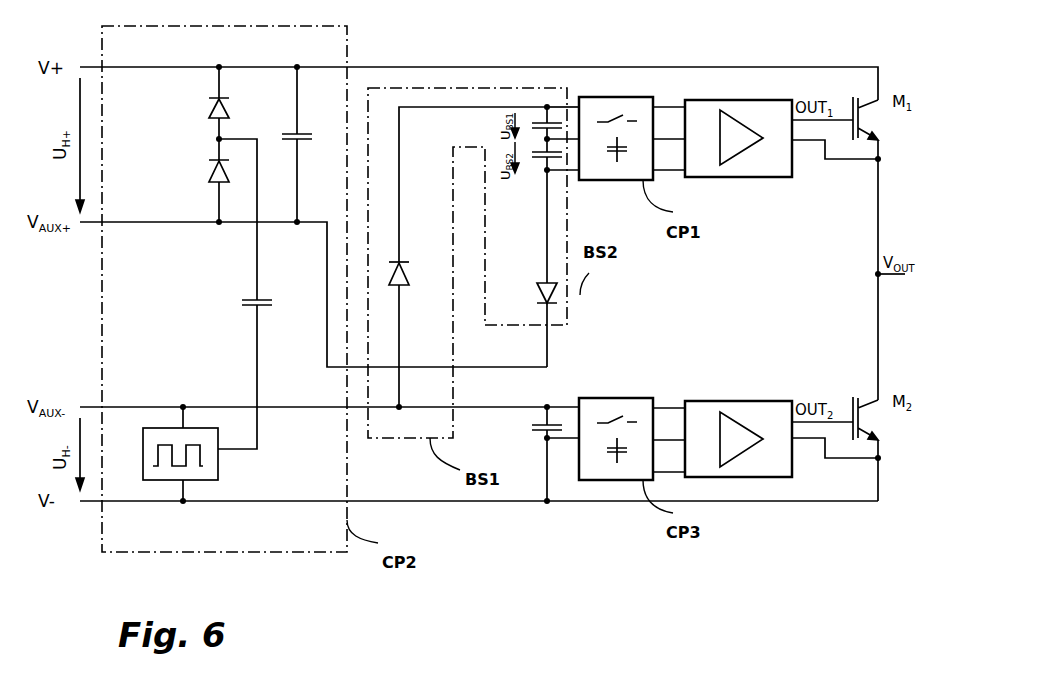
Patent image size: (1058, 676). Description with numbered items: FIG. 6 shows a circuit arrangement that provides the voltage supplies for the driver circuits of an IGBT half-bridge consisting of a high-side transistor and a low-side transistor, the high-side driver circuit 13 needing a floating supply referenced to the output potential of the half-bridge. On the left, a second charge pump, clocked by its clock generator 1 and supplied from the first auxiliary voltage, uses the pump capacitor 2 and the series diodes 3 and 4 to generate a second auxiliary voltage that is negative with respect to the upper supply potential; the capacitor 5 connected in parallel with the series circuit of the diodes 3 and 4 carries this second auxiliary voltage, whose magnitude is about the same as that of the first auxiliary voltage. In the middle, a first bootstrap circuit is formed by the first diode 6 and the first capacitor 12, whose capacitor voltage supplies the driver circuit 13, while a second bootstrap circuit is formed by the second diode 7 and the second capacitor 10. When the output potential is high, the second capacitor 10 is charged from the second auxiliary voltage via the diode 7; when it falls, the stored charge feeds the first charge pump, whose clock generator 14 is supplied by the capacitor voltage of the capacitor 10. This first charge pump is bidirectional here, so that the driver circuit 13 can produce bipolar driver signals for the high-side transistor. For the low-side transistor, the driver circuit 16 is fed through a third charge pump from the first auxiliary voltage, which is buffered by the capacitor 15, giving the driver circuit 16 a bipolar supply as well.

The pulse generator 1 is at (143, 450).
The pump capacitor 2 is at (252, 294).
The diode 3 is at (211, 180).
The diode 4 is at (211, 103).
The capacitor 5 is at (305, 144).
The first diode 6 is at (405, 331).
The second diode 7 is at (540, 268).
The second capacitor 10 is at (550, 159).
The first capacitor 12 is at (550, 128).
The driver circuit 13 is at (792, 170).
The clock generator 14 is at (853, 308).
The capacitor 15 is at (542, 454).
The driver circuit 16 is at (792, 462).